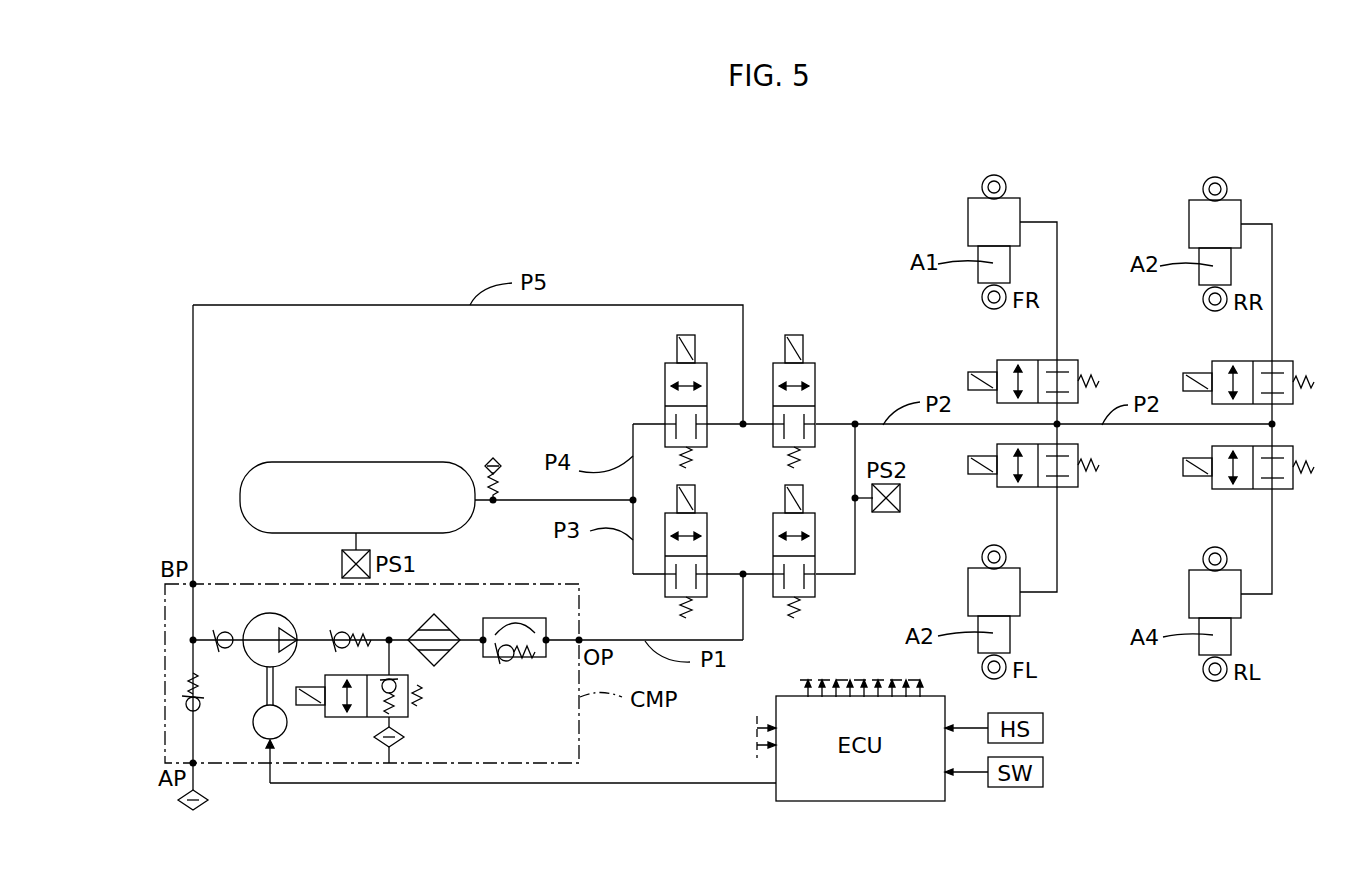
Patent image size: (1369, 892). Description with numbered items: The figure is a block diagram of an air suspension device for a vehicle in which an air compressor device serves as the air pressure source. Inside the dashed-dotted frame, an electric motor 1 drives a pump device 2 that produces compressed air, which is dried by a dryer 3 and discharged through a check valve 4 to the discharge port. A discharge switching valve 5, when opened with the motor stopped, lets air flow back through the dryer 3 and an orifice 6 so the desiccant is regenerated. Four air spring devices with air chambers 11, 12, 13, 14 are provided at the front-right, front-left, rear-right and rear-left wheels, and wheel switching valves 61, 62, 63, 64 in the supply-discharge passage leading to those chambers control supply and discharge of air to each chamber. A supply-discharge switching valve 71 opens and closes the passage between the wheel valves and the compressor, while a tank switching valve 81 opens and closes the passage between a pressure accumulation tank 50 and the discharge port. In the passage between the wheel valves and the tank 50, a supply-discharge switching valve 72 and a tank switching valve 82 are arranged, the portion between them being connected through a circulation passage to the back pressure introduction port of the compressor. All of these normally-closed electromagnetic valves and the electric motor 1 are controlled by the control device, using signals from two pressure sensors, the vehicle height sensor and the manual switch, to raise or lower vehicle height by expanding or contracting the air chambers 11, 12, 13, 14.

The electric motor 1 is at (288, 726).
The pump device 2 is at (277, 614).
The dryer 3 is at (448, 656).
The check valve 4 is at (505, 663).
The discharge switching valve 5 is at (408, 716).
The orifice 6 is at (528, 604).
The air chamber 11 is at (1005, 212).
The air chamber 12 is at (1005, 602).
The air chamber 13 is at (1228, 212).
The air chamber 14 is at (1228, 604).
The pressure accumulation tank 50 is at (355, 462).
The wheel switching valve 61 is at (1005, 363).
The wheel switching valve 62 is at (1013, 488).
The wheel switching valve 63 is at (1225, 365).
The wheel switching valve 64 is at (1228, 491).
The supply-discharge switching valve 71 is at (818, 587).
The supply-discharge switching valve 72 is at (817, 372).
The tank switching valve 81 is at (664, 583).
The tank switching valve 82 is at (664, 375).